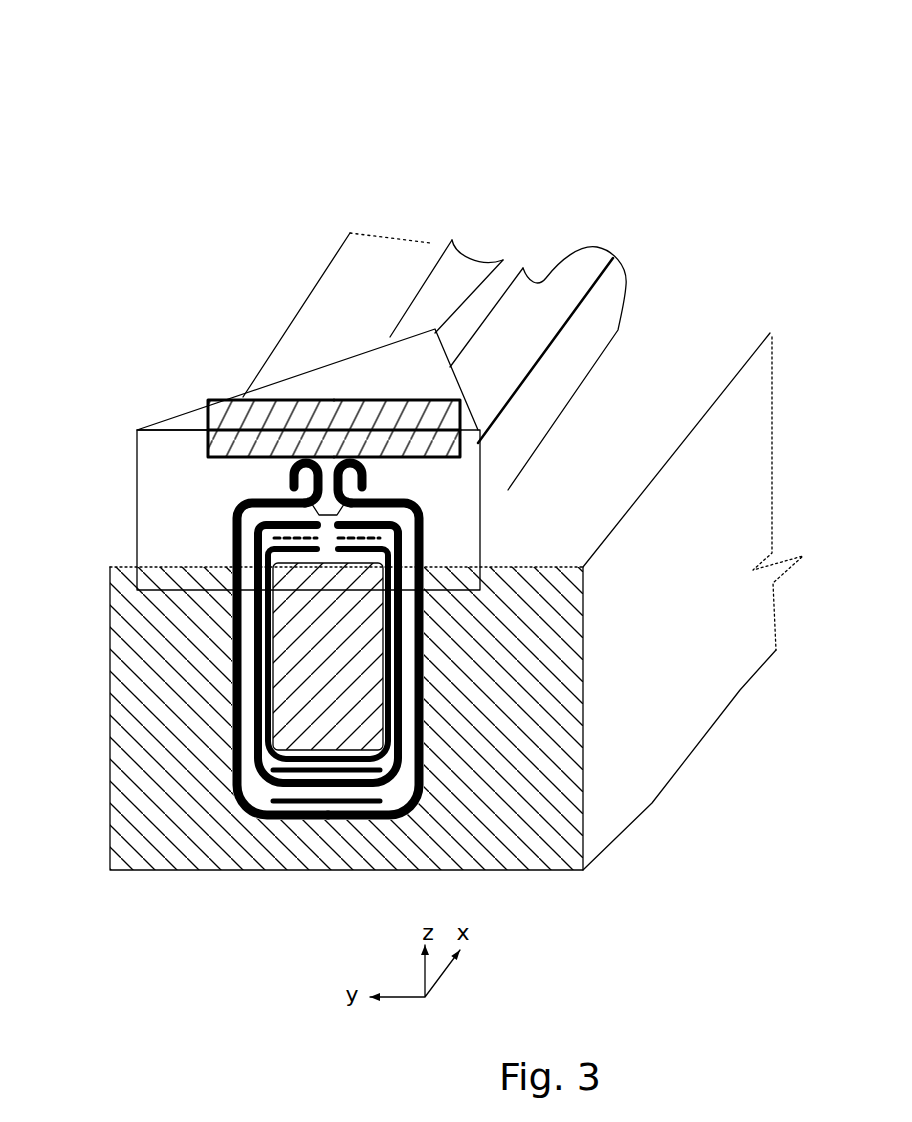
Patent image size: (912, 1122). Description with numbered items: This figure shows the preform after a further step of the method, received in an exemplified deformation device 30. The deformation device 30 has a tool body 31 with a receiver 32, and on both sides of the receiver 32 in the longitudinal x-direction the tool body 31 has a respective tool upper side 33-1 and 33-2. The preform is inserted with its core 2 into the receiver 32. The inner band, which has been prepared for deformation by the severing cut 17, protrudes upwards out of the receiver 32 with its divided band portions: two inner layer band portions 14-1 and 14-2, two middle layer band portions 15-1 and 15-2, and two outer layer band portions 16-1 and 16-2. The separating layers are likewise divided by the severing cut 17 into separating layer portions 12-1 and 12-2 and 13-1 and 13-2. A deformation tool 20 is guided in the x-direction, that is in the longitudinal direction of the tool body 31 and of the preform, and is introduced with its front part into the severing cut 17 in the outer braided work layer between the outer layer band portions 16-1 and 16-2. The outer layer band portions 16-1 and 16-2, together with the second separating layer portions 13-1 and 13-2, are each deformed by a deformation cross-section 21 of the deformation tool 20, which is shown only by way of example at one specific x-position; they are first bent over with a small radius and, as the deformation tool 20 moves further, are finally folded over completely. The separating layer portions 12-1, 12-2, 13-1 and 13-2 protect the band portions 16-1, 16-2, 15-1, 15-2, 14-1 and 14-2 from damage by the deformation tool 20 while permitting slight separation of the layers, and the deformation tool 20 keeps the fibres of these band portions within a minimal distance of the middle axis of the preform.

The core 2 is at (333, 690).
The first separating layer portion 12-1 is at (251, 503).
The first separating layer portion 12-2 is at (400, 522).
The second separating layer portion 13-1 is at (243, 397).
The second separating layer portion 13-2 is at (358, 457).
The inner layer band portion 14-1 is at (269, 549).
The inner layer band portion 14-2 is at (402, 540).
The middle layer band portion 15-1 is at (258, 526).
The middle layer band portion 15-2 is at (404, 499).
The outer layer band portion 16-1 is at (294, 487).
The outer layer band portion 16-2 is at (372, 482).
The severing cut 17 is at (495, 295).
The deformation tool 20 is at (270, 390).
The deformation cross-section 21 is at (338, 413).
The deformation device 30 is at (503, 163).
The tool body 31 is at (652, 803).
The receiver 32 is at (328, 828).
The tool upper side 33-1 is at (368, 300).
The tool upper side 33-2 is at (720, 362).